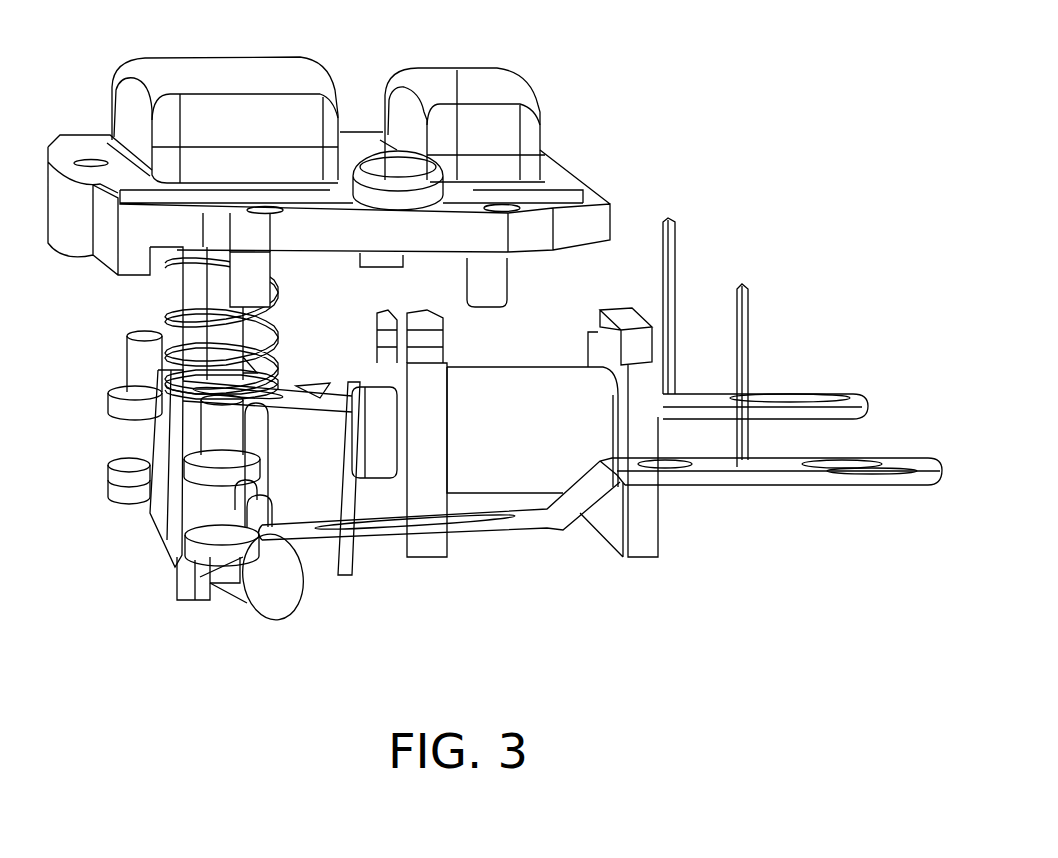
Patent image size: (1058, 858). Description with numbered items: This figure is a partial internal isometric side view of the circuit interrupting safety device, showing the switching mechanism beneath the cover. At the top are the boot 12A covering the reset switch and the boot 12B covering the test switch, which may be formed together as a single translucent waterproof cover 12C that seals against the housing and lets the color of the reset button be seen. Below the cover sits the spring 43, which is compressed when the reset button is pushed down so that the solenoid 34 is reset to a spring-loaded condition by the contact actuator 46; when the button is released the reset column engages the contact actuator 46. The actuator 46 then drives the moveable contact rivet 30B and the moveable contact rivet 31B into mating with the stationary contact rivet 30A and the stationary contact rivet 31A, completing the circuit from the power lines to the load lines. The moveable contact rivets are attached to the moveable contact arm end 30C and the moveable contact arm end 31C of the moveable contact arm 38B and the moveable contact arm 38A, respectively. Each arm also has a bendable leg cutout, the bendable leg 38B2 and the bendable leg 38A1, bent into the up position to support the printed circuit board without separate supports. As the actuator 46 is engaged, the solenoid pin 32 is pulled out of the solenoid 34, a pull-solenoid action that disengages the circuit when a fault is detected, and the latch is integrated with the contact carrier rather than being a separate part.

The boot 12A is at (227, 56).
The boot 12B is at (458, 67).
The waterproof cover 12C is at (80, 133).
The spring 43 is at (170, 317).
The stationary contact rivet 30A is at (138, 366).
The moveable contact rivet 30B is at (137, 460).
The moveable contact arm end 30C is at (110, 487).
The stationary contact rivet 31A is at (190, 470).
The moveable contact rivet 31B is at (183, 553).
The moveable contact arm end 31C is at (205, 563).
The contact actuator 46 is at (287, 603).
The solenoid pin 32 is at (362, 387).
The solenoid 34 is at (520, 367).
The moveable contact arm 38A is at (510, 530).
The bendable leg cutout 38A1 is at (750, 306).
The moveable contact arm 38B is at (817, 393).
The bendable leg cutout 38B2 is at (676, 258).